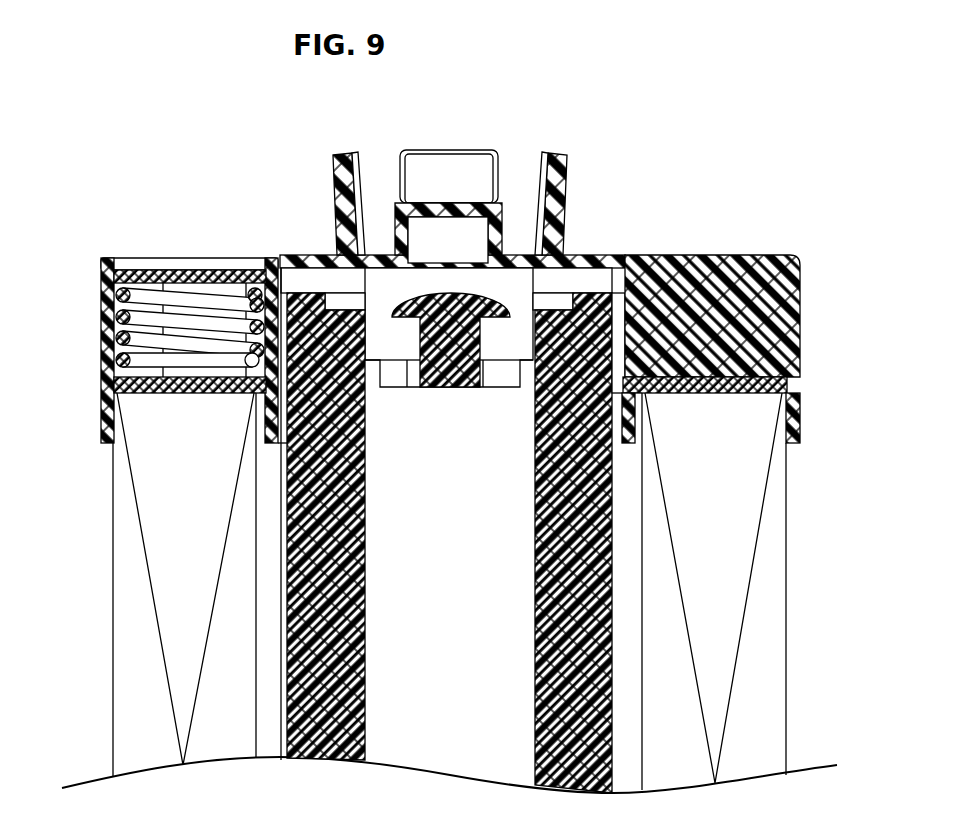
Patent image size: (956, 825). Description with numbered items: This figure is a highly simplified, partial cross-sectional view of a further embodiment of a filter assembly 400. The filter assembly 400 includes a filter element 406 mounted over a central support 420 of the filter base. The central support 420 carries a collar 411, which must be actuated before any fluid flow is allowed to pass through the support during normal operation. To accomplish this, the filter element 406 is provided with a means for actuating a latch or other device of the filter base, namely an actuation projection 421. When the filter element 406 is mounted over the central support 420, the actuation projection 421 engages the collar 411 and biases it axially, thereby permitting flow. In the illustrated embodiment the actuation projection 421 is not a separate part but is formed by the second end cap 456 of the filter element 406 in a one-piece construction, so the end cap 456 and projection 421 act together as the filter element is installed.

The filter assembly 400 is at (170, 113).
The filter element 406 is at (84, 309).
The collar 411 is at (346, 327).
The central support 420 is at (303, 556).
The actuation projection 421 is at (553, 287).
The second end cap 456 is at (720, 268).